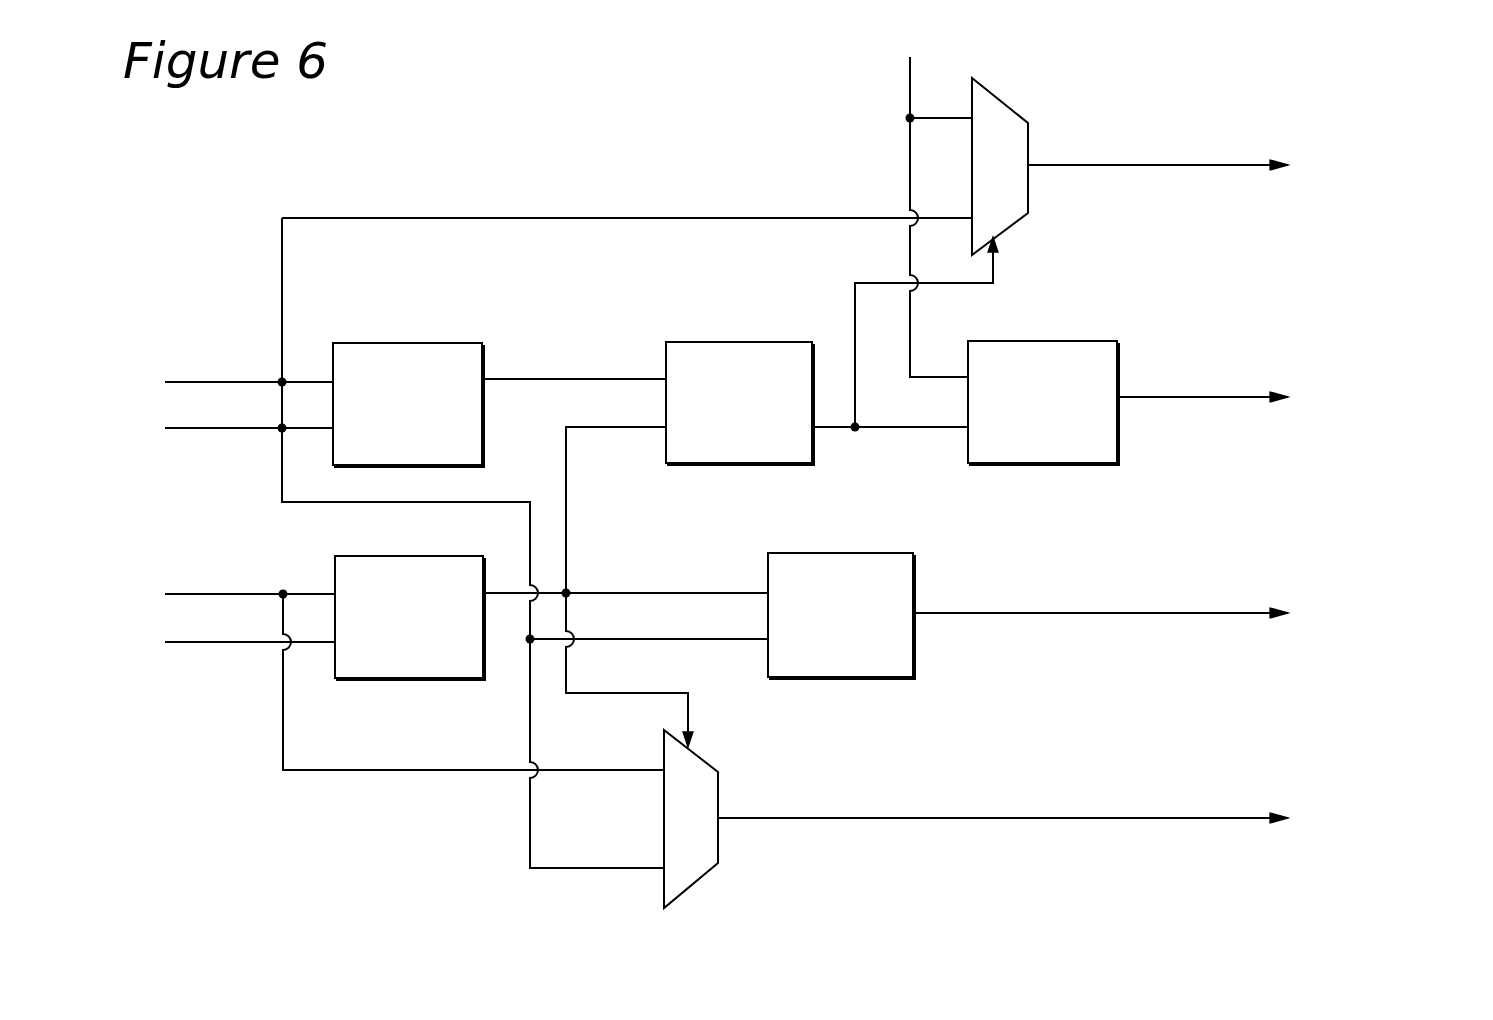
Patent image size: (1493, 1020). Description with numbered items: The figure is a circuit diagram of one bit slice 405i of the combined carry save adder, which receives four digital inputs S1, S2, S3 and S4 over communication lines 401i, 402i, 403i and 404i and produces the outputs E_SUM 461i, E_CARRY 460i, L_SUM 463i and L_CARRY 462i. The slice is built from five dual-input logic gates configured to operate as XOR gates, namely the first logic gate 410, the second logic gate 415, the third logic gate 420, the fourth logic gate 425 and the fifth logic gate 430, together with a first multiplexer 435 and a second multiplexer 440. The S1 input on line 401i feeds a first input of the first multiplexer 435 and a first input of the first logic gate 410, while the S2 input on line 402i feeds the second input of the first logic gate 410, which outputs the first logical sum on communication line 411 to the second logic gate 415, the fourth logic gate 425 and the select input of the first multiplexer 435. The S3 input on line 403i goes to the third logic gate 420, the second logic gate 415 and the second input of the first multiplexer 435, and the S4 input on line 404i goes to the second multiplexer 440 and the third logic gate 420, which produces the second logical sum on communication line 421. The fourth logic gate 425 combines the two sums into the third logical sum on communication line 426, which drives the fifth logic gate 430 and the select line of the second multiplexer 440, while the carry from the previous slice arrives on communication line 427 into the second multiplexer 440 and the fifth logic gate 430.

The bit slice 405i is at (632, 104).
The communication line 401i is at (212, 591).
The communication line 402i is at (215, 648).
The communication line 403i is at (215, 432).
The communication line 404i is at (214, 380).
The first logic gate 410 is at (417, 556).
The communication line 411 is at (623, 593).
The second logic gate 415 is at (869, 553).
The third logic gate 420 is at (415, 343).
The communication line 421 is at (553, 379).
The fourth logic gate 425 is at (753, 342).
The communication line 426 is at (910, 430).
The communication line 427 is at (910, 140).
The fifth logic gate 430 is at (1088, 341).
The first multiplexer 435 is at (707, 762).
The second multiplexer 440 is at (996, 98).
The E_CARRY output 460i is at (1158, 818).
The E_SUM output 461i is at (1149, 613).
The L_CARRY output 462i is at (1136, 165).
The L_SUM output 463i is at (1158, 397).